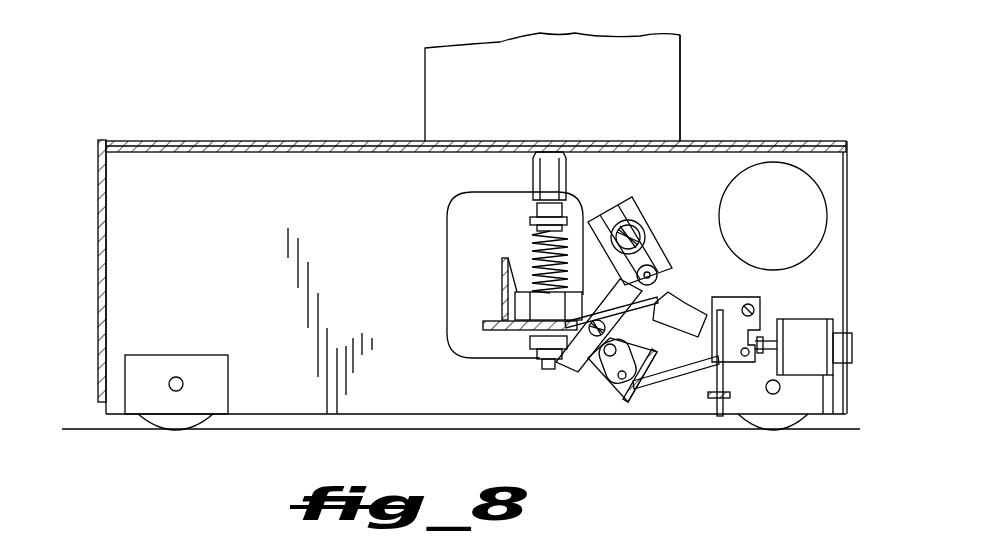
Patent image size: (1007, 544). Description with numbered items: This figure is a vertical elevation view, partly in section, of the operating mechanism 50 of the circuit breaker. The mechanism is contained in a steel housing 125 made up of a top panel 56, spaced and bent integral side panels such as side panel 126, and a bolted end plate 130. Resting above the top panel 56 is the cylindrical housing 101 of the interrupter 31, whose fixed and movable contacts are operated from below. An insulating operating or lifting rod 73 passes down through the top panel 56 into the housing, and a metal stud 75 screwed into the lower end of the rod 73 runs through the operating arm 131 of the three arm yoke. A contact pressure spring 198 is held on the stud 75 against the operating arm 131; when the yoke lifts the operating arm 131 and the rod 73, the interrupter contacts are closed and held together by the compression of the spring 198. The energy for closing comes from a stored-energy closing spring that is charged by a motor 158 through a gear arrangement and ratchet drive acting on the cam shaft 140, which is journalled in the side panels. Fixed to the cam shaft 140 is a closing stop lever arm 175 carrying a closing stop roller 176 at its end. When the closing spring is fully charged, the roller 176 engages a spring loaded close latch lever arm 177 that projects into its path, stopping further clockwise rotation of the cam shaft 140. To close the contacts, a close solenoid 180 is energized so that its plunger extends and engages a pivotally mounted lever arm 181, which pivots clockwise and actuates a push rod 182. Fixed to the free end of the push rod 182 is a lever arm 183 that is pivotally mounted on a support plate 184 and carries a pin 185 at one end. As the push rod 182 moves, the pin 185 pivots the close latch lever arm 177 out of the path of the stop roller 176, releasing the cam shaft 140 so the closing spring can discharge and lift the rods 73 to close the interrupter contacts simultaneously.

The interrupter 31 is at (683, 66).
The operating mechanism 50 is at (256, 138).
The top panel 56 is at (340, 141).
The operating rod 73 is at (548, 168).
The metal stud 75 is at (540, 240).
The cylindrical housing 101 is at (572, 84).
The housing 125 is at (96, 190).
The side panel 126 is at (240, 238).
The end plate 130 is at (96, 316).
The operating arm 131 is at (488, 336).
The cam shaft 140 is at (646, 190).
The motor 158 is at (808, 178).
The closing stop lever arm 175 is at (646, 218).
The closing stop roller 176 is at (660, 270).
The close latch lever arm 177 is at (582, 366).
The close solenoid 180 is at (810, 326).
The lever arm 181 is at (753, 297).
The push rod 182 is at (686, 372).
The lever arm 183 is at (612, 386).
The support plate 184 is at (630, 402).
The pin 185 is at (597, 378).
The contact pressure spring 198 is at (540, 252).